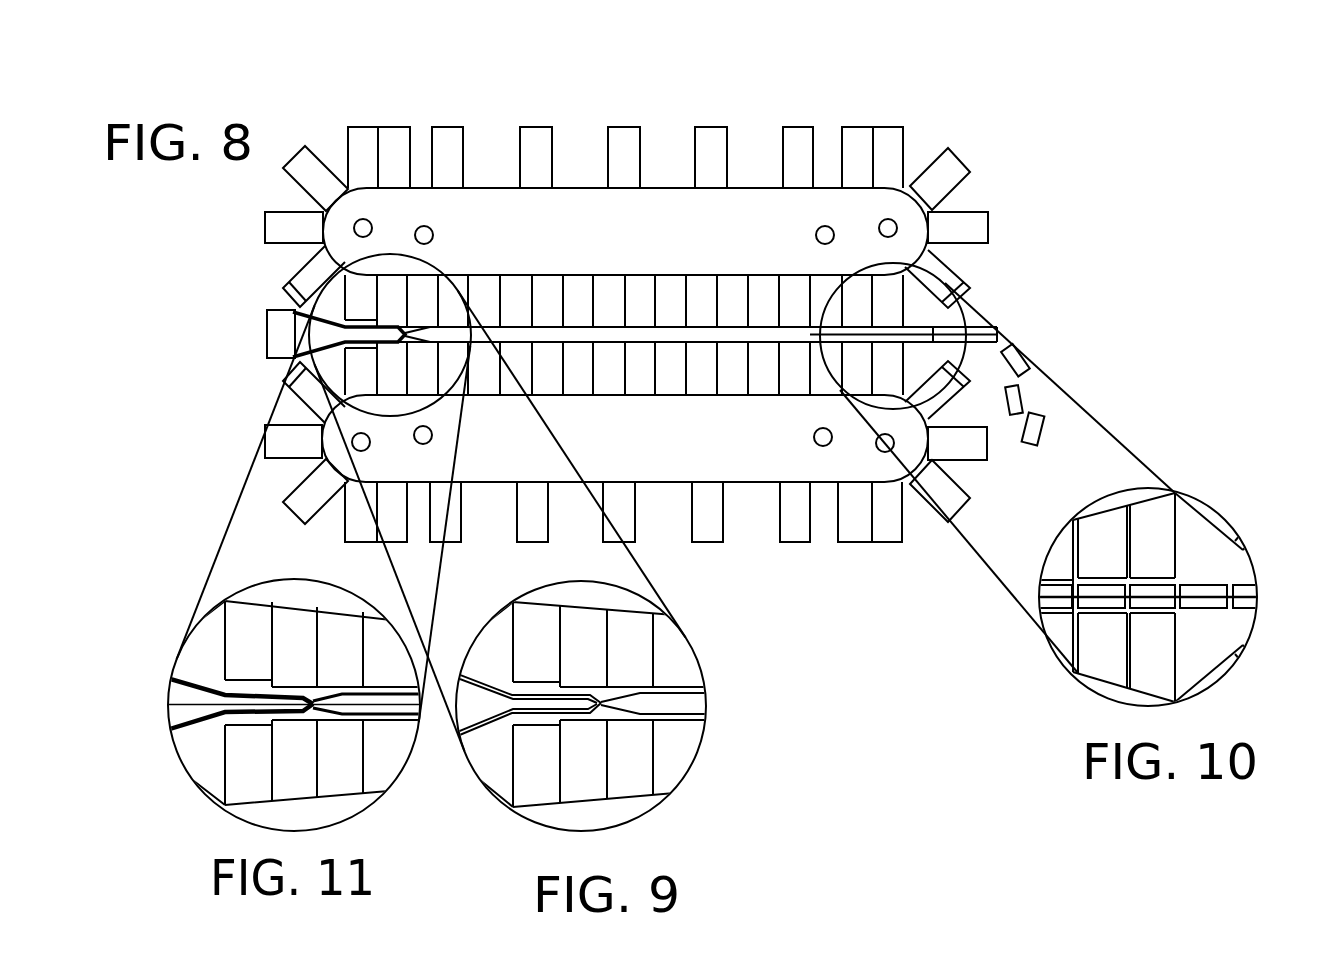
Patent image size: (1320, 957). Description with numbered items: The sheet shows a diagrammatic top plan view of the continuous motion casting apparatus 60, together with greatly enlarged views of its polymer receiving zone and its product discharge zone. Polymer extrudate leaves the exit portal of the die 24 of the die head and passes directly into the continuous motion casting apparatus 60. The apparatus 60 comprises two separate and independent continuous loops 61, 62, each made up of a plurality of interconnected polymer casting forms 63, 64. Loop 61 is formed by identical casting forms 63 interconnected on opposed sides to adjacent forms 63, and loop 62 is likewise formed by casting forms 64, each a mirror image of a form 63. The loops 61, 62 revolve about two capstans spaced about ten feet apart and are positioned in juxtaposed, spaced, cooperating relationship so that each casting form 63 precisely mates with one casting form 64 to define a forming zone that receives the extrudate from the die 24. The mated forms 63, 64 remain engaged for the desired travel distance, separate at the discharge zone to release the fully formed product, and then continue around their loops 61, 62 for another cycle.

In FIG. 8, the die 24 is at (281, 361).
In FIG. 11, the die 24 is at (292, 704).
In FIG. 8, the continuous motion casting apparatus 60 is at (1008, 262).
In FIG. 10, the continuous motion casting apparatus 60 is at (1150, 597).
In FIG. 8, the continuous loop 61 is at (255, 234).
In FIG. 8, the continuous loop 62 is at (848, 563).
In FIG. 8, the polymer casting form 63 is at (710, 137).
In FIG. 11, the polymer casting form 63 is at (278, 666).
In FIG. 9, the polymer casting form 63 is at (567, 666).
In FIG. 10, the polymer casting form 63 is at (1088, 561).
In FIG. 8, the polymer casting form 64 is at (700, 385).
In FIG. 11, the polymer casting form 64 is at (278, 774).
In FIG. 9, the polymer casting form 64 is at (567, 774).
In FIG. 10, the polymer casting form 64 is at (1088, 667).